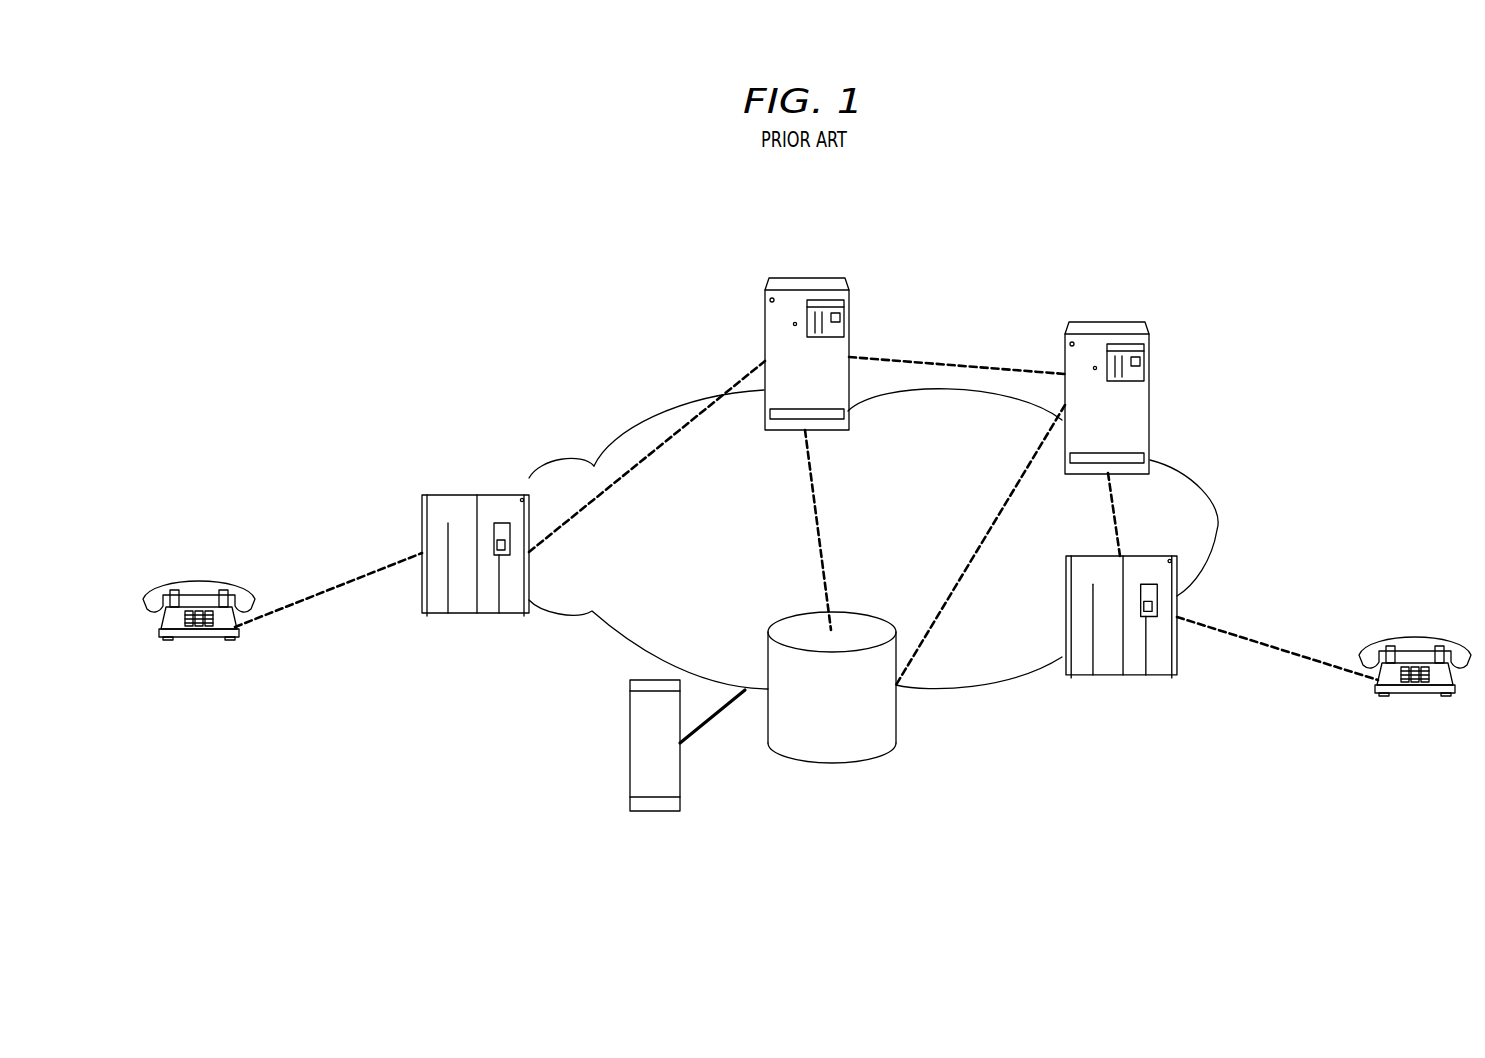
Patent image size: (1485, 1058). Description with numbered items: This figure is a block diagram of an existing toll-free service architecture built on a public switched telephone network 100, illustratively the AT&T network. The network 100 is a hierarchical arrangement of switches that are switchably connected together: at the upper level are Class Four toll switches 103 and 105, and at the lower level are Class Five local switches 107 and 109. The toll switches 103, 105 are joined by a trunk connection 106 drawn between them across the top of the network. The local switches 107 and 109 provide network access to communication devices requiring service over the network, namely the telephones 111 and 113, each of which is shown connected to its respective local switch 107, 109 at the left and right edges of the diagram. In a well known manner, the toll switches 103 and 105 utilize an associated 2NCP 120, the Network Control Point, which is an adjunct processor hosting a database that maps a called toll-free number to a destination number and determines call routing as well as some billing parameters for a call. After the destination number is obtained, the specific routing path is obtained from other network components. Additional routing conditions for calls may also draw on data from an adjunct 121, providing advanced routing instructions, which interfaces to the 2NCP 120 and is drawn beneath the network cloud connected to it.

The public switched telephone network 100 is at (1217, 530).
The toll switch 103 is at (765, 318).
The toll switch 105 is at (1150, 403).
The trunk between toll switches 106 is at (955, 360).
The local switch 107 is at (422, 593).
The local switch 109 is at (1177, 657).
The telephone 111 is at (198, 577).
The telephone 113 is at (1415, 633).
The 2NCP 120 is at (896, 726).
The adjunct 121 is at (630, 742).